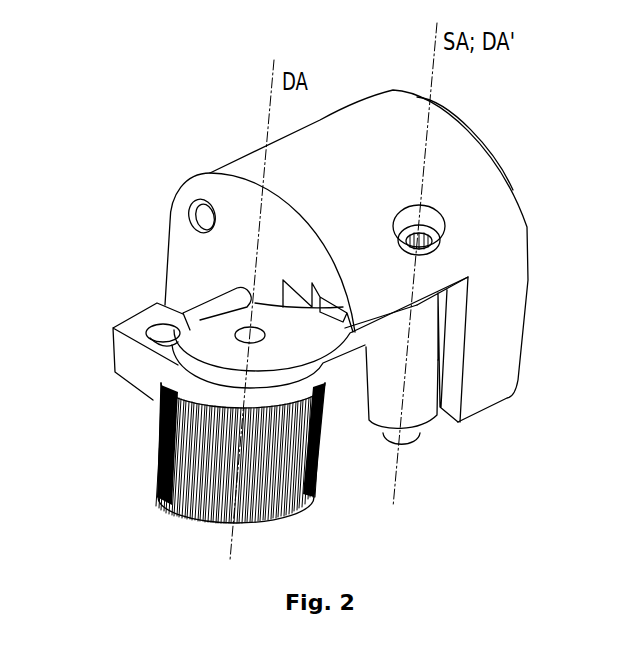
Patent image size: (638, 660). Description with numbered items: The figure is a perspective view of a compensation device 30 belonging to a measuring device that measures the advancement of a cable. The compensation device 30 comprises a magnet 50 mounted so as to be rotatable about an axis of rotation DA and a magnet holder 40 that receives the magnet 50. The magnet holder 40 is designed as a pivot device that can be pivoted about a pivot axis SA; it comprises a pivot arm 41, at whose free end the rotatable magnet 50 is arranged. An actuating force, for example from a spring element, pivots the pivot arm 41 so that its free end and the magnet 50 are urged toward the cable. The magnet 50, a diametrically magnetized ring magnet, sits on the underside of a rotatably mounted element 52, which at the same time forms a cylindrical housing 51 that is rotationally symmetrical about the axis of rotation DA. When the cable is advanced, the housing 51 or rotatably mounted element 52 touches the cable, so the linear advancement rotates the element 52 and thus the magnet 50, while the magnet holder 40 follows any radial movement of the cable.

The compensation device 30 is at (181, 86).
The magnet holder 40 is at (397, 382).
The pivot arm 41 is at (219, 343).
The magnet 50 is at (213, 495).
The housing 51 is at (178, 455).
The rotatably mounted element 52 is at (158, 443).